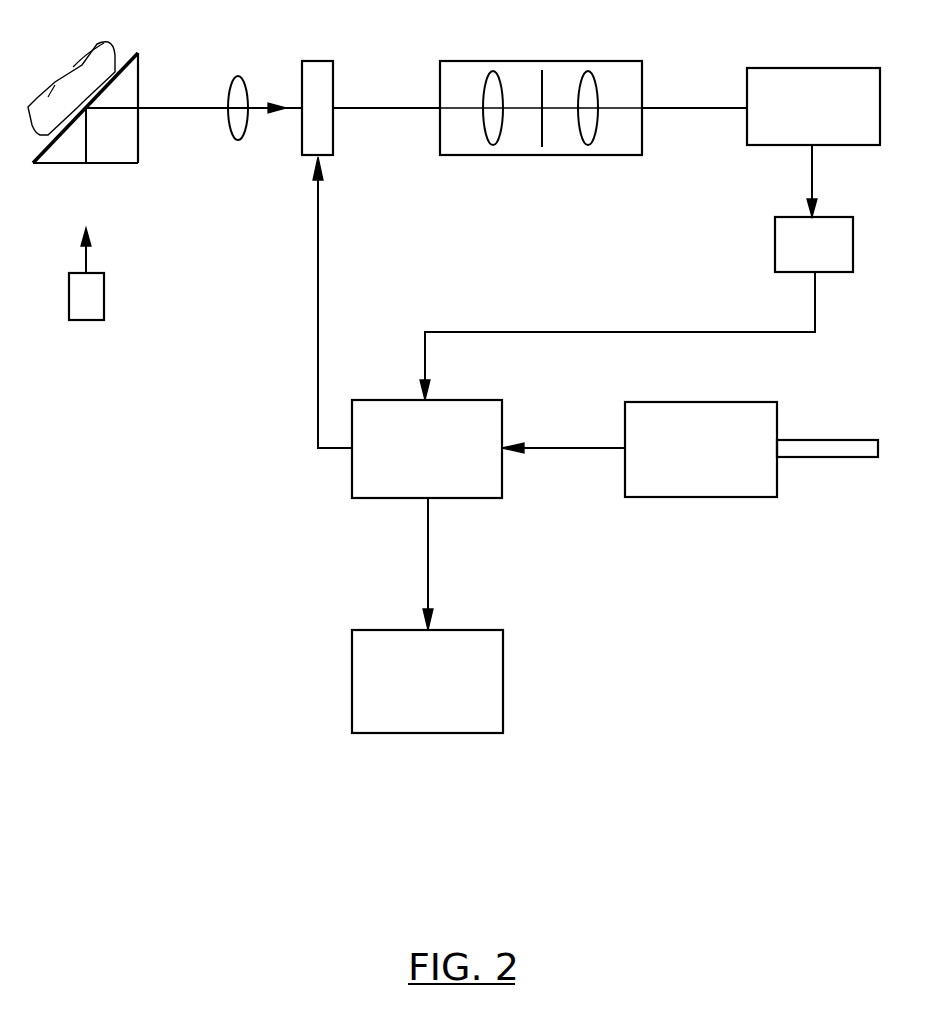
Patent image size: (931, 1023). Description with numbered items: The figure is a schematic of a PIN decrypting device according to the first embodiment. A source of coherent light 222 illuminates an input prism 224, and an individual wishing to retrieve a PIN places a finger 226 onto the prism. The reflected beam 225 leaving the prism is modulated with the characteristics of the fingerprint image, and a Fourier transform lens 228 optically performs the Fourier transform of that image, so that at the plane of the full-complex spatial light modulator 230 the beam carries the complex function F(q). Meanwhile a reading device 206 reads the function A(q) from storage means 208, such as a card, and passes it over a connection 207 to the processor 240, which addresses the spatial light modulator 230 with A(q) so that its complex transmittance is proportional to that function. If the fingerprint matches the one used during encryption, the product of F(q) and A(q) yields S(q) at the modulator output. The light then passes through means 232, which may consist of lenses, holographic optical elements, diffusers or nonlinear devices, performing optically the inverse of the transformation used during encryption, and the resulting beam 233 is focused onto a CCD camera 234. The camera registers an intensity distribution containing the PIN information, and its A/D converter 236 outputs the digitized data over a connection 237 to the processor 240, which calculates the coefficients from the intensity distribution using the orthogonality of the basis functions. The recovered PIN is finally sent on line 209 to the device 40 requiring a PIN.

The source of coherent light 222 is at (103, 300).
The input prism 224 is at (128, 159).
The reflected beam 225 is at (188, 107).
The finger 226 is at (50, 93).
The Fourier transform lens 228 is at (237, 139).
The full-complex spatial light modulator 230 is at (323, 70).
The means performing optically an inverse transformation 232 is at (510, 60).
The beam 233 is at (698, 104).
The CCD camera 234 is at (805, 73).
The A/D converter 236 is at (783, 230).
The digitized signal 237 is at (595, 331).
The processor 240 is at (481, 405).
The reading device 206 is at (702, 405).
The signal line 207 is at (565, 445).
The storage means 208 is at (827, 458).
The line 209 is at (431, 565).
The device requiring a PIN 40 is at (407, 728).